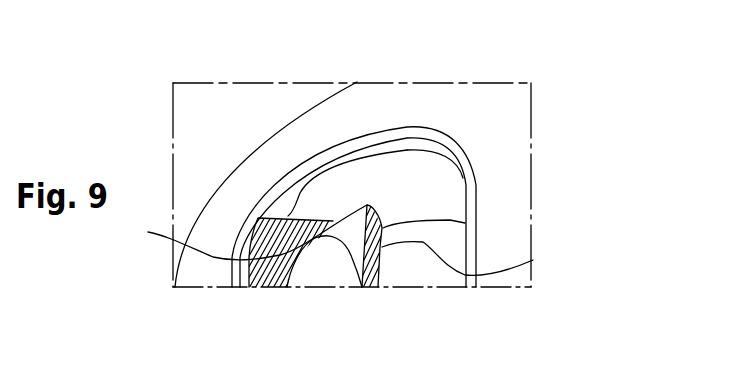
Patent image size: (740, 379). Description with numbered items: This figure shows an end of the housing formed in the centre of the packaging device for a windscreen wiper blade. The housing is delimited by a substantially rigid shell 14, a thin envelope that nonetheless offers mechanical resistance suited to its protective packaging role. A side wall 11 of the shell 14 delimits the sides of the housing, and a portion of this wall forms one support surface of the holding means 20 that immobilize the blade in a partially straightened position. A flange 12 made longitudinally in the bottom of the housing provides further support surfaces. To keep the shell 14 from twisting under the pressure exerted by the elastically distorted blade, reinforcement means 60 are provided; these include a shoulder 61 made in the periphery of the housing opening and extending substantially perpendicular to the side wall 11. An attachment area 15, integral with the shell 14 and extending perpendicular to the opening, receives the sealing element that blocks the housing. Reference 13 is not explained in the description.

The wall 11 is at (252, 238).
The flange 12 is at (533, 260).
The cavity 13 is at (407, 265).
The shell 14 is at (273, 141).
The attachment area 15 is at (489, 98).
The holding means 20 is at (266, 245).
The reinforcement means 60 is at (313, 167).
The shoulder 61 is at (244, 212).